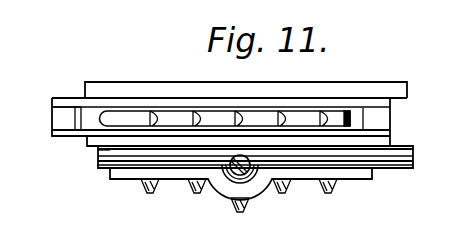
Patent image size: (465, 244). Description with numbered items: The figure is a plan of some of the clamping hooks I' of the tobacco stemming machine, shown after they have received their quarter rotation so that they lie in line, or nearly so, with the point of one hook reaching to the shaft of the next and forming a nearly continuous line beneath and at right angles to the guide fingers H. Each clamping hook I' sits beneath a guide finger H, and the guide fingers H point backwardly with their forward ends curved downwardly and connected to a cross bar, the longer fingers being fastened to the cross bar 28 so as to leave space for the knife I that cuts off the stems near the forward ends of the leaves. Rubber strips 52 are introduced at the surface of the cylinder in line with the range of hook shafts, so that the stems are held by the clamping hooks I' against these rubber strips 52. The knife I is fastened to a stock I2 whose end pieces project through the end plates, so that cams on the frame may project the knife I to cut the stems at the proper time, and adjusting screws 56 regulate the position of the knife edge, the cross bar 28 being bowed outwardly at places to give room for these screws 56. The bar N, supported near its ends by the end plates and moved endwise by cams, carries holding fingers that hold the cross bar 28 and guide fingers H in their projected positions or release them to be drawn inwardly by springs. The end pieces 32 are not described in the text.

The rubber strip 52 is at (80, 112).
The end bracket 32 is at (49, 121).
The clamping hook I' is at (225, 104).
The bar N is at (320, 113).
The knife I is at (261, 145).
The stock I2 is at (98, 157).
The cross bar 28 is at (130, 176).
The adjusting screw 56 is at (262, 180).
The guide finger H is at (153, 192).